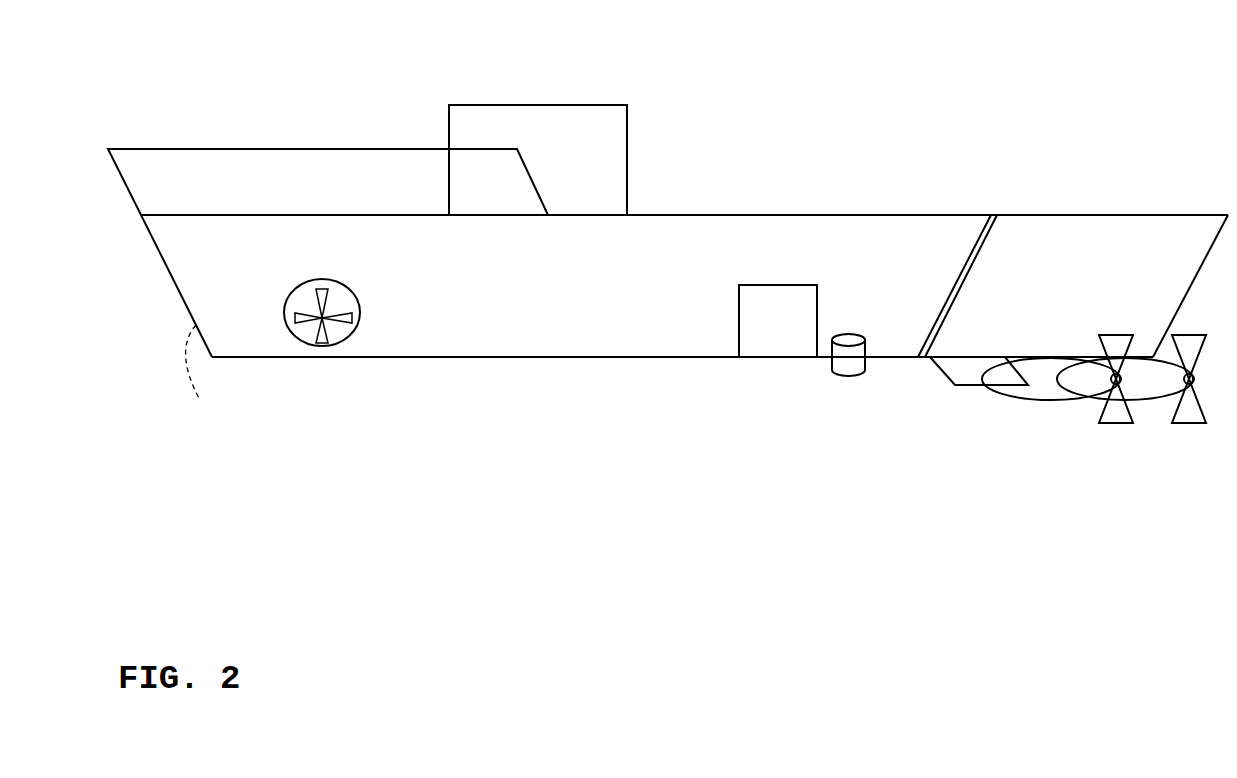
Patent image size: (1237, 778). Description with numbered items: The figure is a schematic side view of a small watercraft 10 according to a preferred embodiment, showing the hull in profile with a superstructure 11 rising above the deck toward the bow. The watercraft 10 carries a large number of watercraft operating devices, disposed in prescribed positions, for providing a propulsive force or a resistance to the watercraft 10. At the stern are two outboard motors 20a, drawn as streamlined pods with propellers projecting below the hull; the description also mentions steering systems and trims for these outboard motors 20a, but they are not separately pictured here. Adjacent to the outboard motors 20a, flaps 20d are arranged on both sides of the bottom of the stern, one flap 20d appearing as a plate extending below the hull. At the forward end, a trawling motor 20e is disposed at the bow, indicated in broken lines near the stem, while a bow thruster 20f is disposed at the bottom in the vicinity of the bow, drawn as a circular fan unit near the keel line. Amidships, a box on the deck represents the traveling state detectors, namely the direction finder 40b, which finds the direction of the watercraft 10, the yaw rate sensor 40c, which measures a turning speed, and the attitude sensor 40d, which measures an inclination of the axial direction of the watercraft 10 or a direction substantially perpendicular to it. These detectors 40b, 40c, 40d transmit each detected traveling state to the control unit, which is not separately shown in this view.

The watercraft 10 is at (815, 200).
The bridge / cabin 11 is at (568, 105).
The outboard motors 20a is at (1052, 402).
The flaps 20d is at (938, 387).
The trawling motor 20e is at (200, 400).
The bow thruster 20f is at (347, 345).
The direction finder 40b is at (760, 367).
The yaw rate sensor 40c is at (760, 367).
The attitude sensor 40d is at (739, 325).